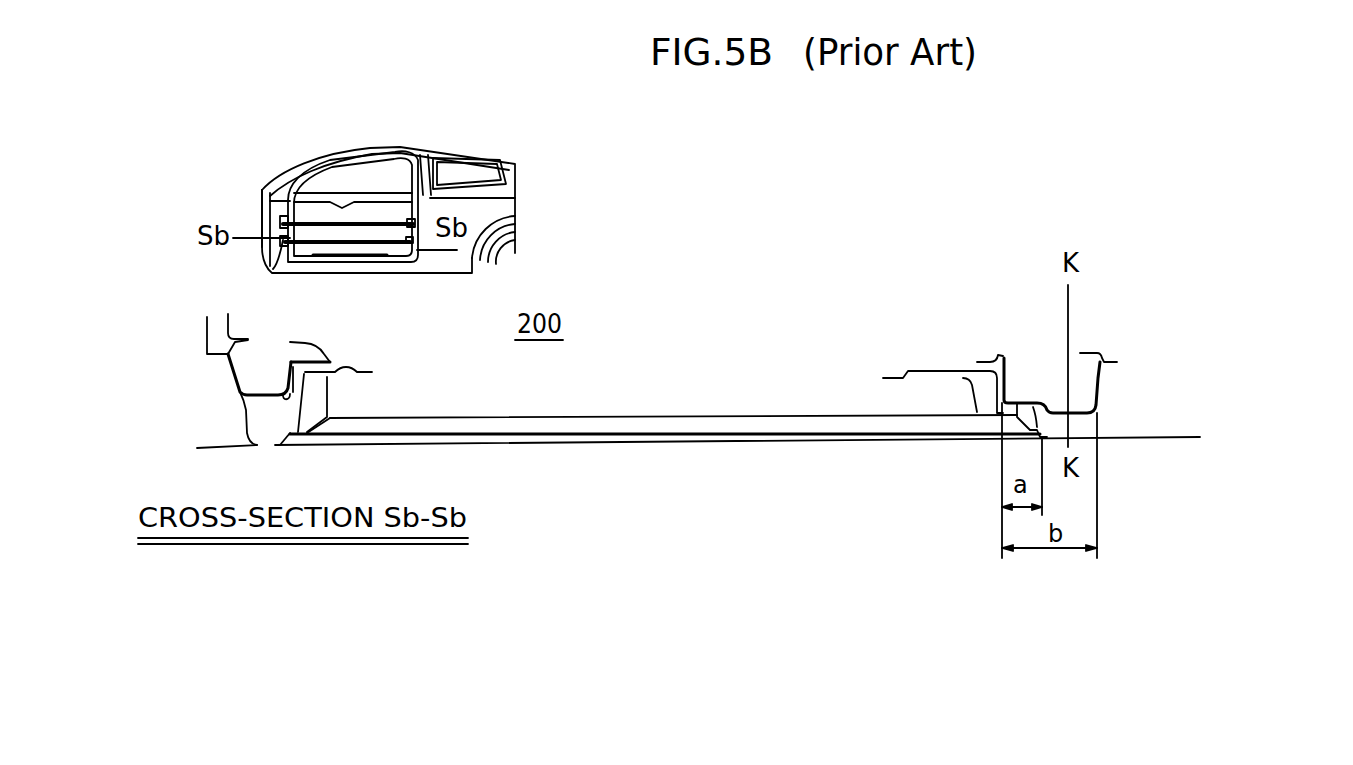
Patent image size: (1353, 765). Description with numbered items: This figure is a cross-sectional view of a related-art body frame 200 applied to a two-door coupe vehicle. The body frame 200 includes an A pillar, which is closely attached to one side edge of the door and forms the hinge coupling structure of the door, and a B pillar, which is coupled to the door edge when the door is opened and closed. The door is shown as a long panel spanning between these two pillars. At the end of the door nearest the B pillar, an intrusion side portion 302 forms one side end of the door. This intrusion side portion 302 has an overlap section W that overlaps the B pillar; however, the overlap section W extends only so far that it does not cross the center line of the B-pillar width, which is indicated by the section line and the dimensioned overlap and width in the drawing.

The body frame 200 is at (373, 267).
The intrusion side portion 302 is at (1017, 407).
The overlap section W is at (1133, 402).